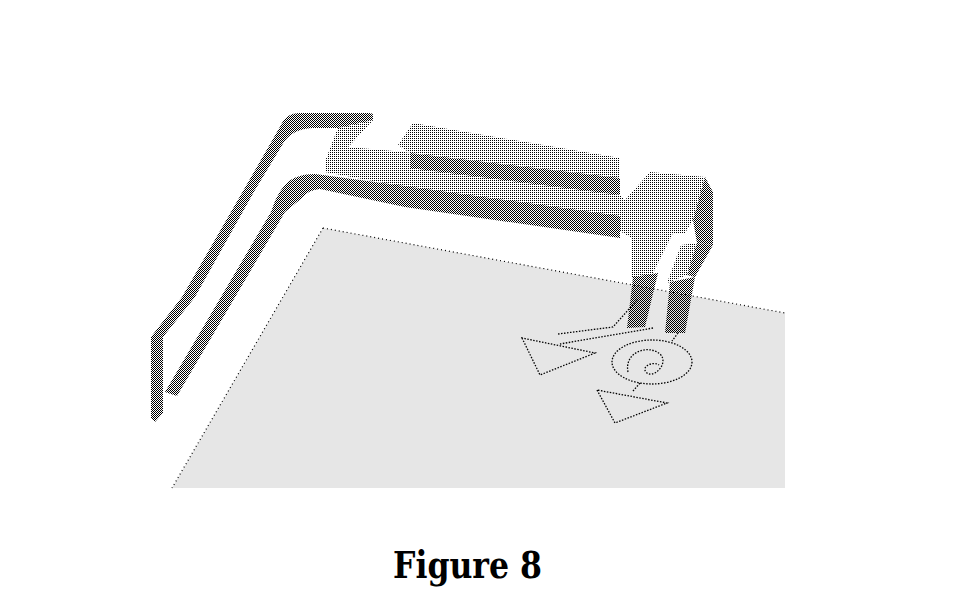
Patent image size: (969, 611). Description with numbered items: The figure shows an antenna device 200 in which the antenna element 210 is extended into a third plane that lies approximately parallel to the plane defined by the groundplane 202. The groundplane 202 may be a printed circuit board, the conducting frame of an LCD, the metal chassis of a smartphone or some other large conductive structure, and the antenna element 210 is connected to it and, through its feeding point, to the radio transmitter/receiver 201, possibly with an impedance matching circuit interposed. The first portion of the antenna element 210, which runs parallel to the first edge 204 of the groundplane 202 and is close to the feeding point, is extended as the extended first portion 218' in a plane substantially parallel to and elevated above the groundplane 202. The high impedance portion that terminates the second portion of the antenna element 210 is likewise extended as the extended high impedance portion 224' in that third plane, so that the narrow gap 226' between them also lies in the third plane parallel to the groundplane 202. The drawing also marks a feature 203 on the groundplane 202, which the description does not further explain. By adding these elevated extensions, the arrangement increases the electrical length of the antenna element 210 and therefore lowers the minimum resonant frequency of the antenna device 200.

The antenna device 200 is at (436, 211).
The radio transmitter/receiver 201 is at (680, 378).
The groundplane 202 is at (757, 400).
The top surface of substrate 203 is at (722, 302).
The first edge 204 is at (200, 445).
The antenna element 210 is at (256, 152).
The extended first portion 218' is at (327, 107).
The extended high impedance portion 224' is at (488, 110).
The narrow gap 226' is at (519, 219).